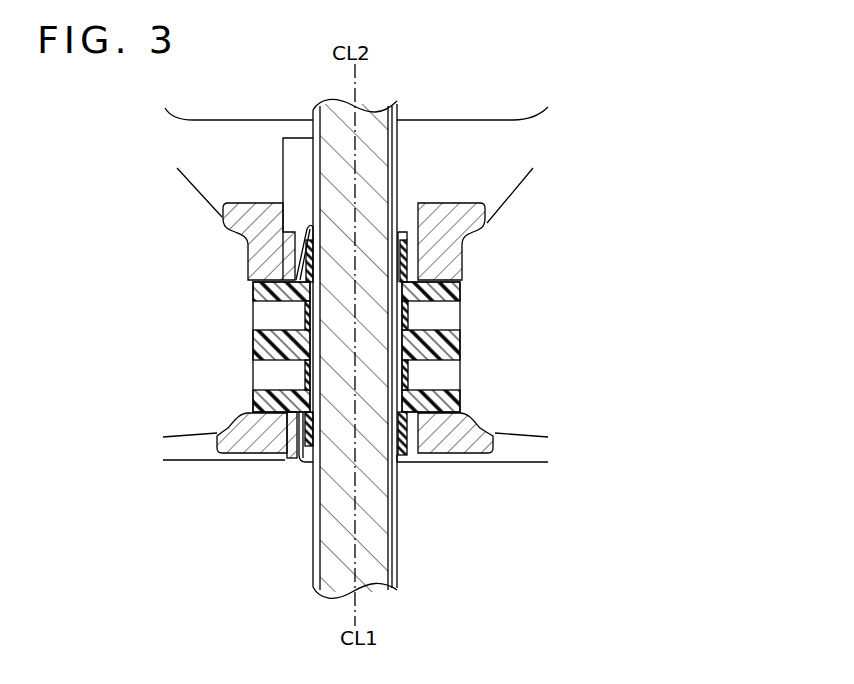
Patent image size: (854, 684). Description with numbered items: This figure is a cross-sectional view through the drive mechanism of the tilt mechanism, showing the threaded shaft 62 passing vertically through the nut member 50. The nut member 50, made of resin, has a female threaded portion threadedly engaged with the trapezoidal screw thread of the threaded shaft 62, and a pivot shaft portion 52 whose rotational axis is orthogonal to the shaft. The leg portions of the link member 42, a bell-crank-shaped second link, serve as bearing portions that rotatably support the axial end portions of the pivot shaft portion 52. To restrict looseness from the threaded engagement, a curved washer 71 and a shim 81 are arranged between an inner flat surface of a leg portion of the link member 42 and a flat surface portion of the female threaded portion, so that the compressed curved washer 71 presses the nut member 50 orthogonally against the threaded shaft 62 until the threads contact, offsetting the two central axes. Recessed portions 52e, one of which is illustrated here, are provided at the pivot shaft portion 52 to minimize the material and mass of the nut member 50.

The link member 42 is at (250, 443).
The nut member 50 is at (412, 416).
The pivot shaft portion 52 is at (433, 415).
The recessed portions 52e is at (268, 302).
The threaded shaft 62 is at (333, 550).
The curved washer 71 is at (300, 463).
The shim 81 is at (292, 462).